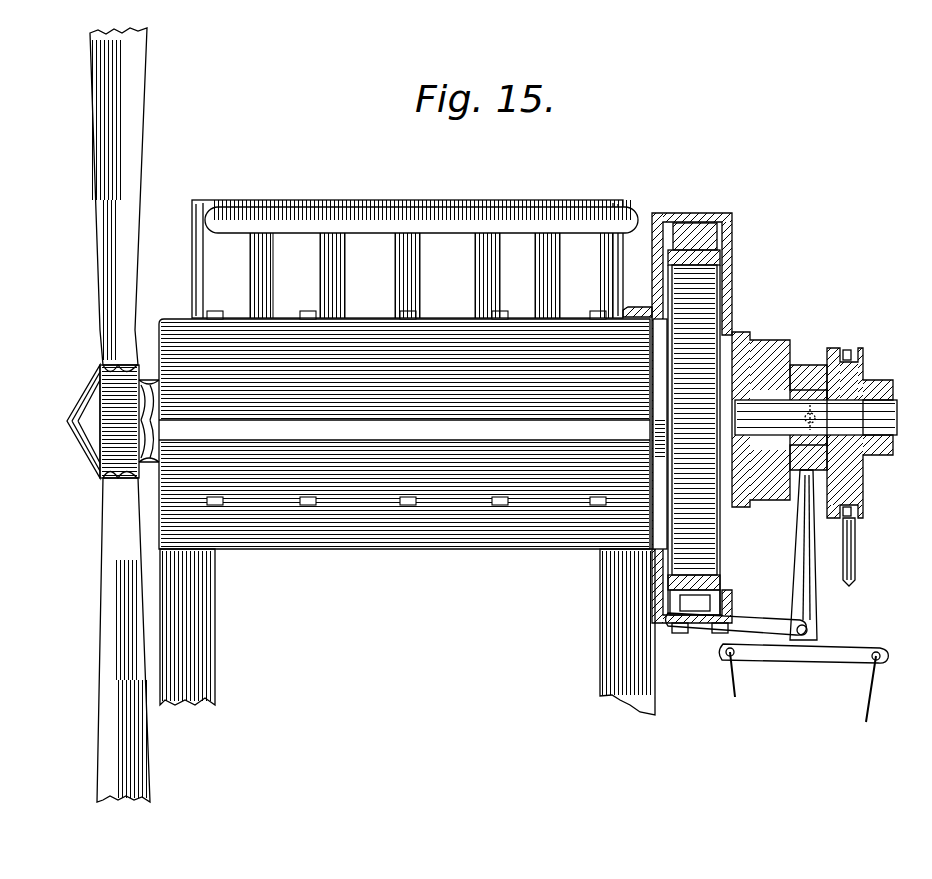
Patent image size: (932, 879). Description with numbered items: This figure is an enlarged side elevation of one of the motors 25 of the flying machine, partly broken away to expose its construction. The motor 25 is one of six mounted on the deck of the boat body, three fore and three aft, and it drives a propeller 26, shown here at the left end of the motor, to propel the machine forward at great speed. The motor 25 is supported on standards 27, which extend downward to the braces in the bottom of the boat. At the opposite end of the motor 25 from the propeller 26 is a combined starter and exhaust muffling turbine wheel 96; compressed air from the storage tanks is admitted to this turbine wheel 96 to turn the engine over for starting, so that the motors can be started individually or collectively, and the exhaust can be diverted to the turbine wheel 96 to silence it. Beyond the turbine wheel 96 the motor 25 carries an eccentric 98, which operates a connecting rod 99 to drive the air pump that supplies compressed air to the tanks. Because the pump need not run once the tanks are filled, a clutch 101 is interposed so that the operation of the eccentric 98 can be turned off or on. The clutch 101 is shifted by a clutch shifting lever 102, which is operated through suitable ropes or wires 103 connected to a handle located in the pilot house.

The motor 25 is at (467, 468).
The propeller 26 is at (108, 203).
The standard 27 is at (203, 662).
The combined starter and exhaust muffling turbine wheel 96 is at (693, 243).
The eccentric 98 is at (858, 373).
The connecting rod 99 is at (848, 556).
The clutch 101 is at (773, 346).
The clutch shifting lever 102 is at (806, 585).
The ropes or wires 103 is at (745, 684).